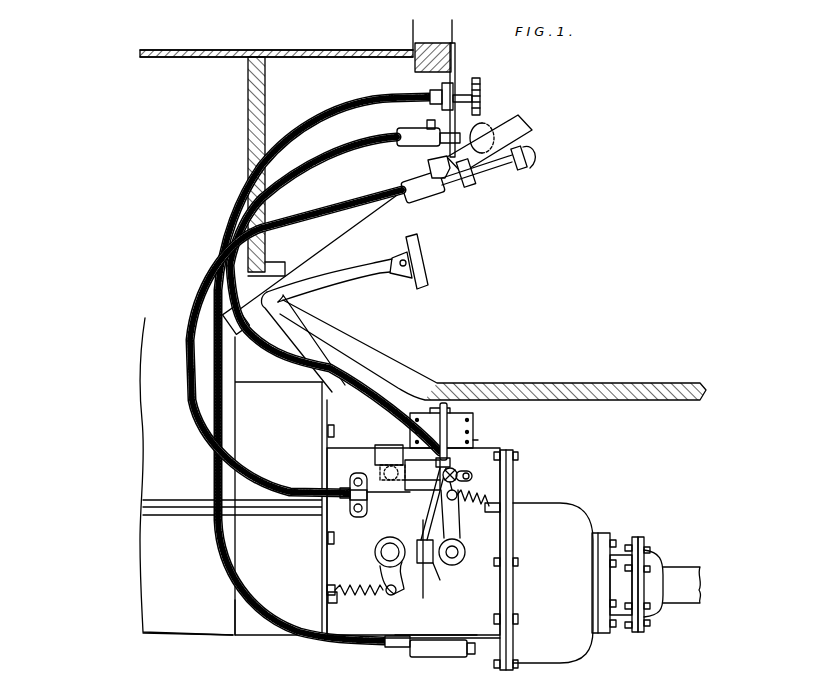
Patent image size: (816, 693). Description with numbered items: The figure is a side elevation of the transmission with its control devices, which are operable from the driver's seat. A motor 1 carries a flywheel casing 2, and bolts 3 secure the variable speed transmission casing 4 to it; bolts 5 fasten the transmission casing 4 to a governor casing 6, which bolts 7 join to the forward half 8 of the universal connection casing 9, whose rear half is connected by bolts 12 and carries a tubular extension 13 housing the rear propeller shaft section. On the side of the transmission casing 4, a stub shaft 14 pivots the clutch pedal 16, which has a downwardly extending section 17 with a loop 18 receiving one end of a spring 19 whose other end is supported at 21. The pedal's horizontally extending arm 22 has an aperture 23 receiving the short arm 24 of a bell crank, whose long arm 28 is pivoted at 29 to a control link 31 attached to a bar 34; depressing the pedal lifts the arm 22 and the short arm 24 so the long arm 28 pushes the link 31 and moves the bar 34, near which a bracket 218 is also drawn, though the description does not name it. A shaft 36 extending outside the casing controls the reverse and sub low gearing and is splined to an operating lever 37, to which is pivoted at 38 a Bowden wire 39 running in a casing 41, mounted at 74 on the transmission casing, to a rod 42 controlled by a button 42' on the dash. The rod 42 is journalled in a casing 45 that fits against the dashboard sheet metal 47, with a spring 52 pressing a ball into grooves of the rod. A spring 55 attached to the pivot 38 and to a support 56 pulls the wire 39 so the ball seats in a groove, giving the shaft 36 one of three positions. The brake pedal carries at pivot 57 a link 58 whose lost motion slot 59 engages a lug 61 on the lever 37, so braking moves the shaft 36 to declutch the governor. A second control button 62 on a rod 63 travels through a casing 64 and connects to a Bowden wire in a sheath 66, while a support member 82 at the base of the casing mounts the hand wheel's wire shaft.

The motor 1 is at (170, 640).
The flywheel casing 2 is at (252, 640).
The bolts 3 is at (334, 432).
The variable speed transmission casing 4 is at (488, 640).
The bolts 5 is at (516, 455).
The governor casing 6 is at (584, 515).
The bolts 7 is at (594, 560).
The forward half of universal connection casing 8 is at (631, 540).
The universal connection casing 9 is at (653, 543).
The bolts 12 is at (644, 626).
The tubular extension 13 is at (690, 573).
The stub shaft 14 is at (386, 551).
The clutch pedal 16 is at (359, 275).
The downwardly extending section 17 is at (398, 586).
The loop 18 is at (392, 598).
The spring 19 is at (374, 98).
The spring support 21 is at (334, 597).
The horizontally extending arm 22 is at (432, 572).
The aperture 23 is at (435, 561).
The short arm of bell crank lever 24 is at (423, 586).
The long arm of bell crank lever 28 is at (428, 506).
The pivot 29 is at (436, 462).
The control link 31 is at (448, 431).
The bar 34 is at (437, 411).
The shaft 36 is at (460, 552).
The operating lever 37 is at (457, 522).
The pivot 38 is at (458, 494).
The Bowden wire 39 is at (408, 490).
The Bowden wire casing 41 is at (366, 188).
The rod 42 is at (487, 169).
The button 42' is at (541, 150).
The casing 45 is at (410, 198).
The sheet metal of dashboard 47 is at (466, 188).
The spring 52 is at (430, 171).
The spring 55 is at (480, 500).
The support 56 is at (496, 508).
The pivot 57 is at (382, 472).
The link 58 is at (406, 464).
The lost motion slot 59 is at (470, 474).
The lug 61 is at (465, 470).
The control button 62 is at (500, 125).
The rod 63 is at (478, 128).
The casing 64 is at (402, 146).
The sheath 66 is at (361, 137).
The mounting 74 is at (351, 486).
The support member 82 is at (432, 656).
The bracket 218 is at (474, 441).